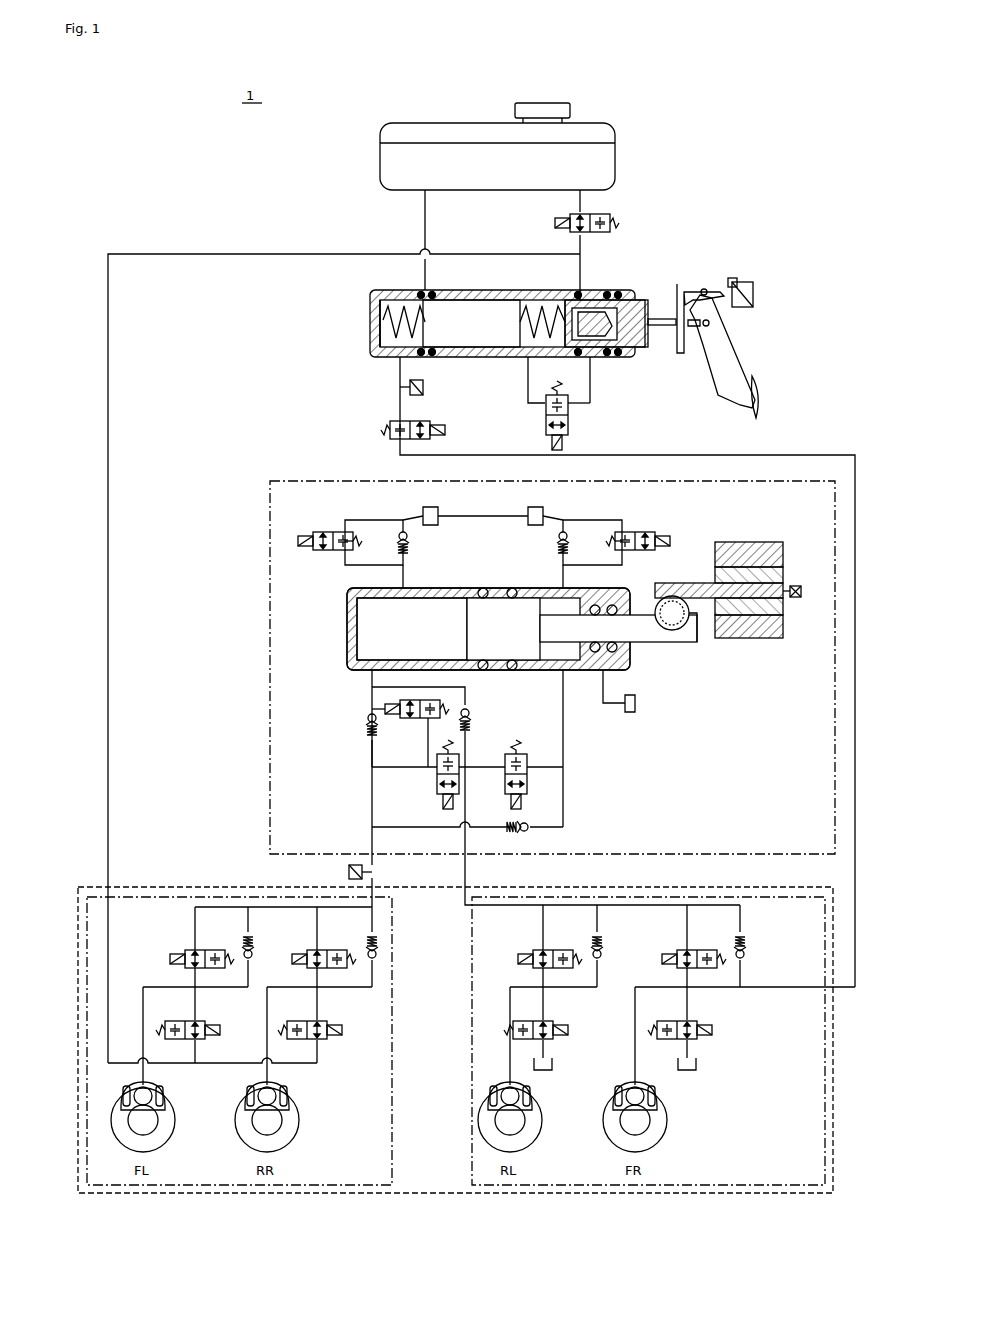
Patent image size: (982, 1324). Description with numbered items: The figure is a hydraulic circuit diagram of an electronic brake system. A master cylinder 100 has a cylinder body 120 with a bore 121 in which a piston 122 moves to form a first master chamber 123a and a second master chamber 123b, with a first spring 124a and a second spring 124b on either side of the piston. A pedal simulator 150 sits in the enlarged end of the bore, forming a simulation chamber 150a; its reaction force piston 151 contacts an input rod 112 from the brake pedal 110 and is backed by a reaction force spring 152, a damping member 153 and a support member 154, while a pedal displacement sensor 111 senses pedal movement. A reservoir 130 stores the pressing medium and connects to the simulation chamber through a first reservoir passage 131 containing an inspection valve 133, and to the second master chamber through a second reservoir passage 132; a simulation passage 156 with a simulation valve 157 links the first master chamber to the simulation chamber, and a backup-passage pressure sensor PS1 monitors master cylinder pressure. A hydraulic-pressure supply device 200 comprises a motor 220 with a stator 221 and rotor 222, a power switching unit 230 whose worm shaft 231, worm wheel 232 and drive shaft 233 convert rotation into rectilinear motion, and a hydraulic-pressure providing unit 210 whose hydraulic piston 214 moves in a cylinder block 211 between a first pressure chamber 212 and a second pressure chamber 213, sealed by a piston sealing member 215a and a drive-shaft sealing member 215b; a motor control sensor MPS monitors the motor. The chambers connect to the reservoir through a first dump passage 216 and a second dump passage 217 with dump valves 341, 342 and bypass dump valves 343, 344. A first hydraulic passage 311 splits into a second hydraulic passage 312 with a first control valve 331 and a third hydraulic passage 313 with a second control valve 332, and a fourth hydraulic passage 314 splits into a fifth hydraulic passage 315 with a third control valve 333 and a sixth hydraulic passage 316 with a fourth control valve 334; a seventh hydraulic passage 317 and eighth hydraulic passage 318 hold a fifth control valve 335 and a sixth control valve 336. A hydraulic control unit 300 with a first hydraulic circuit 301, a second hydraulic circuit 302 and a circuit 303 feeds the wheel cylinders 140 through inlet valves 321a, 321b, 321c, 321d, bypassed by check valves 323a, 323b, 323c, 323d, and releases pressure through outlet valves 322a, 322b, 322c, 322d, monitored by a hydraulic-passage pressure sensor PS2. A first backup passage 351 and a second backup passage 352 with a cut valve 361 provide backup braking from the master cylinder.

The master cylinder 100 is at (680, 242).
The brake pedal 110 is at (723, 350).
The pedal displacement sensor 111 is at (748, 280).
The input rod 112 is at (663, 319).
The cylinder body 120 is at (370, 298).
The bore 121 is at (465, 300).
The piston 122 is at (485, 302).
The first master chamber 123a is at (553, 308).
The second master chamber 123b is at (382, 340).
The first spring 124a is at (530, 306).
The second spring 124b is at (383, 322).
The reservoir 130 is at (407, 120).
The first reservoir passage 131 is at (580, 200).
The second reservoir passage 132 is at (425, 212).
The inspection valve 133 is at (568, 228).
The wheel cylinder 140 is at (165, 1097).
The pedal simulator 150 is at (680, 372).
The simulation chamber 150a is at (598, 300).
The reaction force piston 151 is at (628, 352).
The reaction force spring 152 is at (594, 340).
The damping member 153 is at (606, 352).
The support member 154 is at (580, 350).
The simulation passage 156 is at (528, 385).
The simulation valve 157 is at (545, 428).
The hydraulic-pressure supply device 200 is at (270, 800).
The hydraulic-pressure providing unit 210 is at (338, 590).
The cylinder block 211 is at (355, 620).
The first pressure chamber 212 is at (370, 640).
The second pressure chamber 213 is at (550, 650).
The hydraulic piston 214 is at (527, 598).
The piston sealing member 215a is at (483, 588).
The drive-shaft sealing member 215b is at (612, 652).
The first dump passage 216 is at (403, 578).
The second dump passage 217 is at (563, 578).
The motor 220 is at (740, 570).
The stator 221 is at (783, 628).
The rotor 222 is at (783, 608).
The power switching unit 230 is at (712, 572).
The worm shaft 231 is at (690, 572).
The worm wheel 232 is at (700, 640).
The drive shaft 233 is at (674, 625).
The hydraulic control unit 300 is at (197, 887).
The first hydraulic circuit 301 is at (460, 948).
The second hydraulic circuit 302 is at (147, 897).
The second hydraulic circuit 303 is at (648, 1041).
The first hydraulic passage 311 is at (372, 682).
The second hydraulic passage 312 is at (468, 690).
The third hydraulic passage 313 is at (365, 754).
The fourth hydraulic passage 314 is at (563, 720).
The fifth hydraulic passage 315 is at (545, 767).
The sixth hydraulic passage 316 is at (545, 827).
The seventh hydraulic passage 317 is at (405, 767).
The eighth hydraulic passage 318 is at (428, 744).
The first inlet valve 321a is at (677, 952).
The second inlet valve 321b is at (533, 952).
The third inlet valve 321c is at (308, 952).
The fourth inlet valve 321d is at (185, 952).
The first outlet valve 322a is at (690, 1020).
The second outlet valve 322b is at (568, 1020).
The third outlet valve 322c is at (322, 1020).
The fourth outlet valve 322d is at (200, 1020).
The check valve 323a is at (737, 942).
The check valve 323b is at (594, 942).
The check valve 323c is at (369, 942).
The check valve 323d is at (245, 942).
The first control valve 331 is at (475, 715).
The second control valve 332 is at (362, 731).
The third control valve 333 is at (505, 784).
The fourth control valve 334 is at (522, 834).
The fifth control valve 335 is at (440, 792).
The sixth control valve 336 is at (375, 708).
The first dump valve 341 is at (403, 520).
The second dump valve 342 is at (563, 520).
The third dump valve 343 is at (320, 530).
The fourth dump valve 344 is at (645, 530).
The first backup passage 351 is at (262, 252).
The second backup passage 352 is at (400, 376).
The cut valve 361 is at (433, 424).
The backup-passage pressure sensor PS1 is at (423, 386).
The hydraulic-passage pressure sensor PS2 is at (345, 872).
The motor control sensor MPS is at (796, 585).